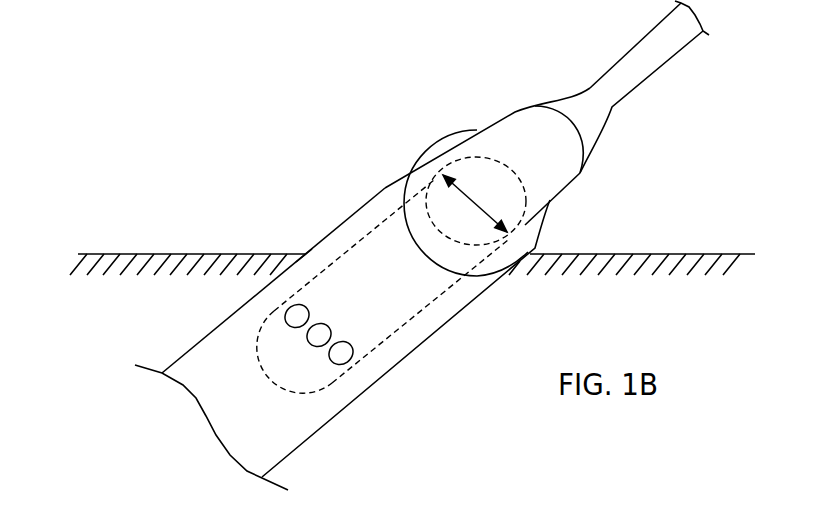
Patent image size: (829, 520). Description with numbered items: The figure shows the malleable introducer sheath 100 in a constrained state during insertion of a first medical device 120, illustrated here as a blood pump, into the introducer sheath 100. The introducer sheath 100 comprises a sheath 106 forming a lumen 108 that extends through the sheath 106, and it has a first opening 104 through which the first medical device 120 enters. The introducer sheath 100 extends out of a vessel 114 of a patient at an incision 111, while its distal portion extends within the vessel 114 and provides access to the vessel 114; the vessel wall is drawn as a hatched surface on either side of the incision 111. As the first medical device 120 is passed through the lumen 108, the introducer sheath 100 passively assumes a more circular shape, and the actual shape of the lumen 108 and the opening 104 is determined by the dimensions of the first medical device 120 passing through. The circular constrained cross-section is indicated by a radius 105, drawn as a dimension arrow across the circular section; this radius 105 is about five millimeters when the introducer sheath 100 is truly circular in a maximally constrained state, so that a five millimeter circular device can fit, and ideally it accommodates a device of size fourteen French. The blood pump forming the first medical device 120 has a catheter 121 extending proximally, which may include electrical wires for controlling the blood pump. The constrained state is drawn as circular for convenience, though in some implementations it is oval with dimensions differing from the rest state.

The malleable introducer sheath 100 is at (362, 289).
The first opening 104 is at (433, 175).
The radius 105 is at (472, 200).
The sheath 106 is at (378, 379).
The lumen 108 is at (458, 247).
The incision 111 is at (304, 253).
The vessel 114 is at (116, 253).
The first medical device 120 is at (496, 125).
The catheter 121 is at (647, 42).